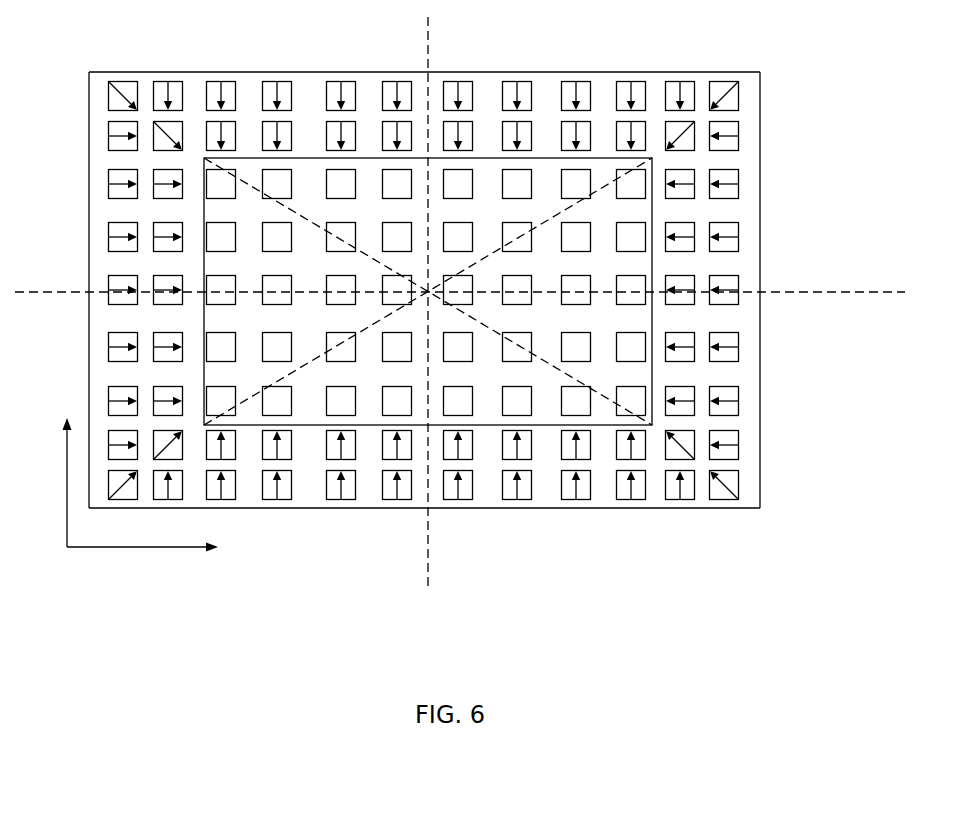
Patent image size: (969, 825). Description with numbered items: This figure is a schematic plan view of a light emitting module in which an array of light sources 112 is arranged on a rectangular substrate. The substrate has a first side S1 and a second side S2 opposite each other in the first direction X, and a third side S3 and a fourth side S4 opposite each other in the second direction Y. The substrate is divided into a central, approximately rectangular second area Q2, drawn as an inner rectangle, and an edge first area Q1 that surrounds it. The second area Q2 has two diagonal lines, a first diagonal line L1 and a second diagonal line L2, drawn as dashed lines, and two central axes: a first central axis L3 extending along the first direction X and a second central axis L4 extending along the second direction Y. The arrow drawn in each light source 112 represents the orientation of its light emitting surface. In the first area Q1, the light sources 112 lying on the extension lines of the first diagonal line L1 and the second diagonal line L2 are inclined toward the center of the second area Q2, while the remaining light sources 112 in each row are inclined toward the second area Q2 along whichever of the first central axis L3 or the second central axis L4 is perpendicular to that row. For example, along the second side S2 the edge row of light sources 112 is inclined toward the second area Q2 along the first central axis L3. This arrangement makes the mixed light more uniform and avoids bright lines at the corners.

The light source 112 is at (739, 175).
The first area Q1 is at (739, 278).
The second area Q2 is at (547, 476).
The first diagonal line L1 is at (428, 291).
The second diagonal line L2 is at (428, 291).
The first central axis L3 is at (460, 306).
The second central axis L4 is at (415, 303).
The first side S1 is at (67, 290).
The second side S2 is at (788, 290).
The third side S3 is at (424, 53).
The fourth side S4 is at (424, 526).
The first direction X is at (142, 561).
The second direction Y is at (56, 482).